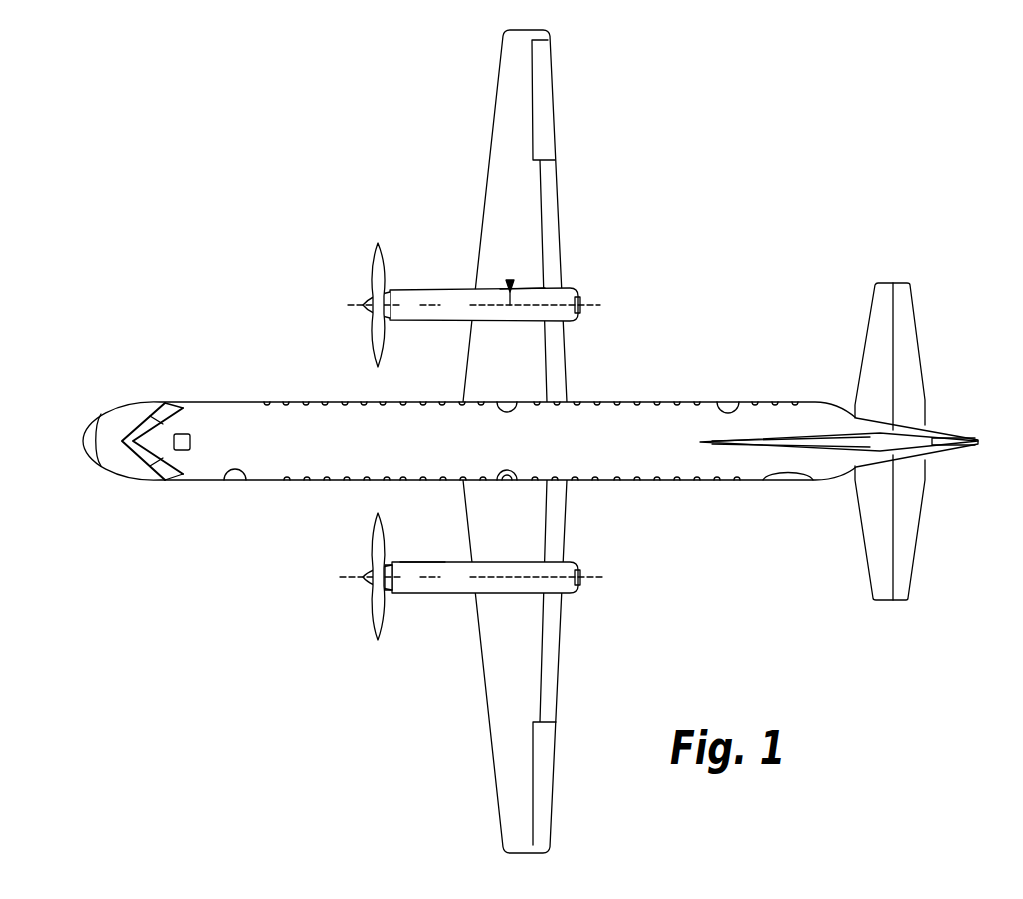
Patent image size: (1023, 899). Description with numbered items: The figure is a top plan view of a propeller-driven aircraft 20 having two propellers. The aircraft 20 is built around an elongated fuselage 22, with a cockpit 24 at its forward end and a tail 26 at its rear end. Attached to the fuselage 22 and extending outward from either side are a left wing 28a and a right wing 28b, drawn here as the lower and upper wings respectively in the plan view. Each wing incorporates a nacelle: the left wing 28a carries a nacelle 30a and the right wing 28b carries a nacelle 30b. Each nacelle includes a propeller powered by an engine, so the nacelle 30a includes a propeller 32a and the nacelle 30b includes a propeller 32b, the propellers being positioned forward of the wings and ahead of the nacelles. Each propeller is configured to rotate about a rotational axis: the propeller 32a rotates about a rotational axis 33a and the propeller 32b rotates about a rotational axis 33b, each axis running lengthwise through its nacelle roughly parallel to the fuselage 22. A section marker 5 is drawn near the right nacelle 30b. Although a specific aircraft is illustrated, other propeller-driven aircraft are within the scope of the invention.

The aircraft 20 is at (757, 177).
The fuselage 22 is at (366, 483).
The cockpit 24 is at (163, 401).
The tail 26 is at (848, 402).
The left wing 28a is at (490, 714).
The right wing 28b is at (497, 67).
The nacelle 30a is at (506, 596).
The nacelle 30b is at (450, 288).
The propeller 32a is at (373, 622).
The propeller 32b is at (372, 346).
The rotational axis 33a is at (428, 562).
The rotational axis 33b is at (522, 304).
The section line 5 is at (510, 290).